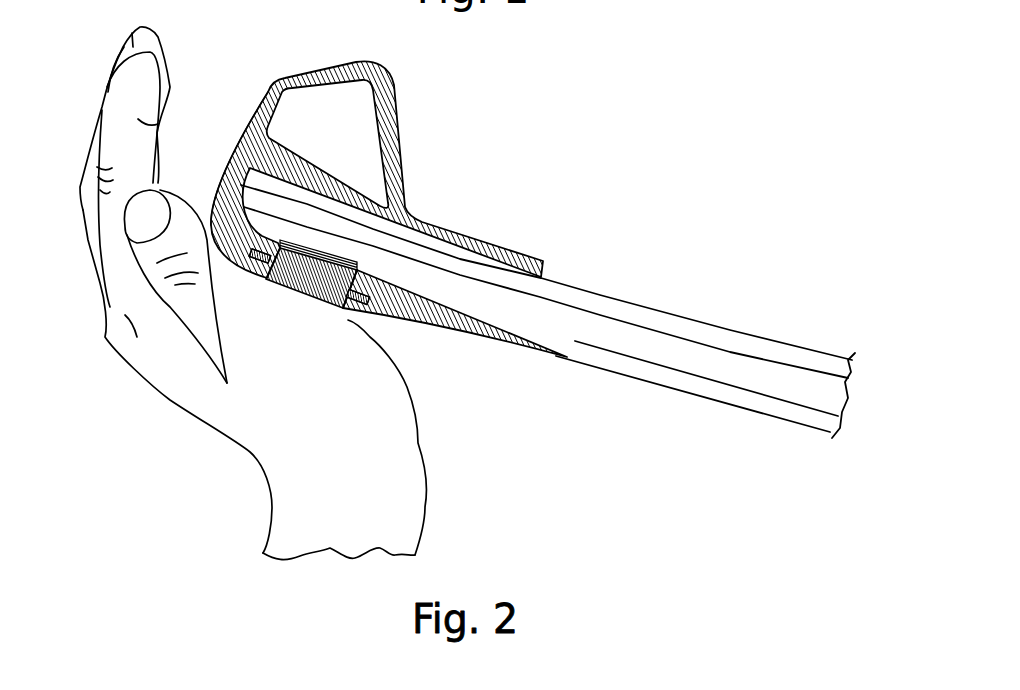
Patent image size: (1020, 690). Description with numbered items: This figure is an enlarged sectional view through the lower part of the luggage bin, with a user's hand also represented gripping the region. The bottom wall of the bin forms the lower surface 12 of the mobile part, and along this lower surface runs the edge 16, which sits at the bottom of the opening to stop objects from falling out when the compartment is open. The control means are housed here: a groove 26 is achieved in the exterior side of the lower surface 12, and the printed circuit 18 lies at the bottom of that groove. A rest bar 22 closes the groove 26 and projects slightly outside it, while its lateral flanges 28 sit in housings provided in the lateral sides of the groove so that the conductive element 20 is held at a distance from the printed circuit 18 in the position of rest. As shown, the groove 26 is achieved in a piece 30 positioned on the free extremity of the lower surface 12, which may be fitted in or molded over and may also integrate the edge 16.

The lower surface 12 is at (657, 387).
The edge 16 is at (293, 77).
The printed circuit 18 is at (293, 238).
The conductive element 20 is at (367, 283).
The rest bar 22 is at (285, 290).
The groove 26 is at (233, 173).
The lateral flanges 28 is at (258, 262).
The piece 30 is at (457, 328).